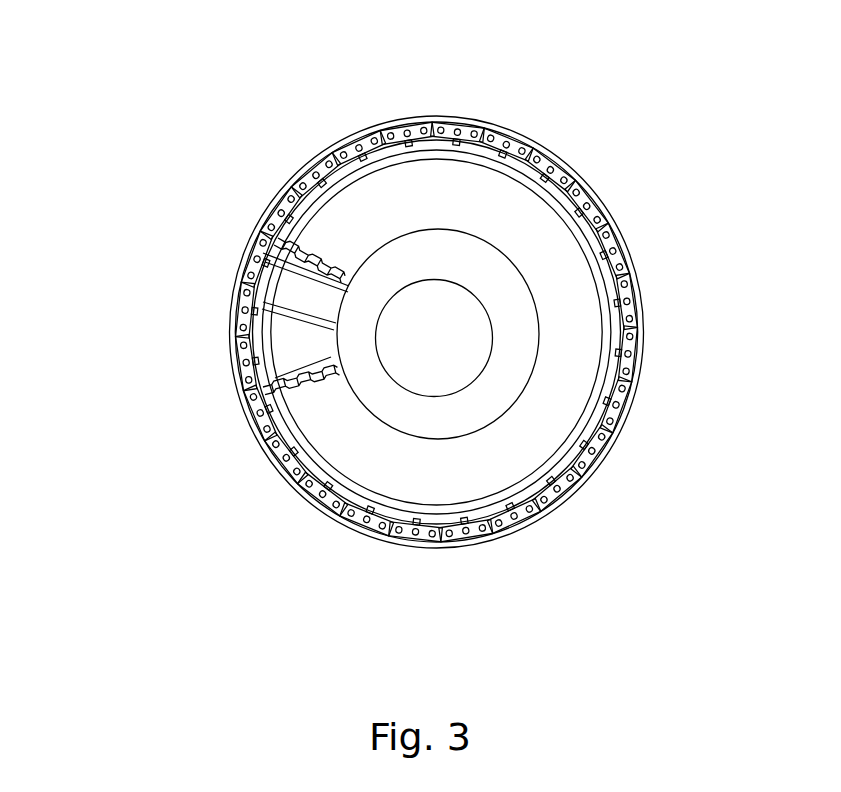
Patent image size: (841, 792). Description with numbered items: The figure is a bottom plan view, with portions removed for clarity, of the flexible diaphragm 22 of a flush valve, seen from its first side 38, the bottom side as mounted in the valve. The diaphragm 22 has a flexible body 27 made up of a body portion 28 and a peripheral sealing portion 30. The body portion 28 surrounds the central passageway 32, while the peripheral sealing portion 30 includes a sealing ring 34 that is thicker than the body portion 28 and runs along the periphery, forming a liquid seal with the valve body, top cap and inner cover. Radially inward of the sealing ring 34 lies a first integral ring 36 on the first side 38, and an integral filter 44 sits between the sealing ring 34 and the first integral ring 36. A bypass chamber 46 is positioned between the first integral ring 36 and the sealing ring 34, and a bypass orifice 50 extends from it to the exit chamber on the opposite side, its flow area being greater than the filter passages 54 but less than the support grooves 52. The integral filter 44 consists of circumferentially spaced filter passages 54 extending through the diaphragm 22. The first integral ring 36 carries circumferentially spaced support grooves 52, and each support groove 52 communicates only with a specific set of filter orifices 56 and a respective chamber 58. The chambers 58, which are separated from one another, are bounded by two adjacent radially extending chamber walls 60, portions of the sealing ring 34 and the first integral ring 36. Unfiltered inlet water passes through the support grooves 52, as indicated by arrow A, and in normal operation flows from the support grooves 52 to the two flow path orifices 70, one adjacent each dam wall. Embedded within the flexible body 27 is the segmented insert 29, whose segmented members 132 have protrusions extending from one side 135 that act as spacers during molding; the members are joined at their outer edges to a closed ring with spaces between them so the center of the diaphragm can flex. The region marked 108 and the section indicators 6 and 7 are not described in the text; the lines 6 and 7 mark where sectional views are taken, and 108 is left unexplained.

The flexible diaphragm 22 is at (248, 182).
The flexible body 27 is at (518, 132).
The body portion 28 is at (407, 247).
The segmented insert 29 is at (270, 291).
The peripheral sealing portion 30 is at (573, 500).
The central passageway 32 is at (434, 338).
The sealing ring 34 is at (625, 245).
The first integral ring 36 is at (527, 495).
The first side 38 is at (295, 223).
The integral filter 44 is at (343, 143).
The bypass chamber 46 is at (630, 372).
The bypass orifice 50 is at (632, 348).
The support grooves 52 is at (459, 147).
The filter passages 54 is at (519, 544).
The filter orifices 56 is at (623, 417).
The chambers 58 is at (268, 447).
The chamber walls 60 is at (488, 525).
The flow path orifices 70 is at (628, 290).
The annular cavity 108 is at (377, 404).
The segmented members 132 is at (262, 245).
The side 135 is at (272, 275).
The section line 6- 6 is at (607, 340).
The section line 7- 7 is at (603, 200).
The arrow A is at (328, 194).